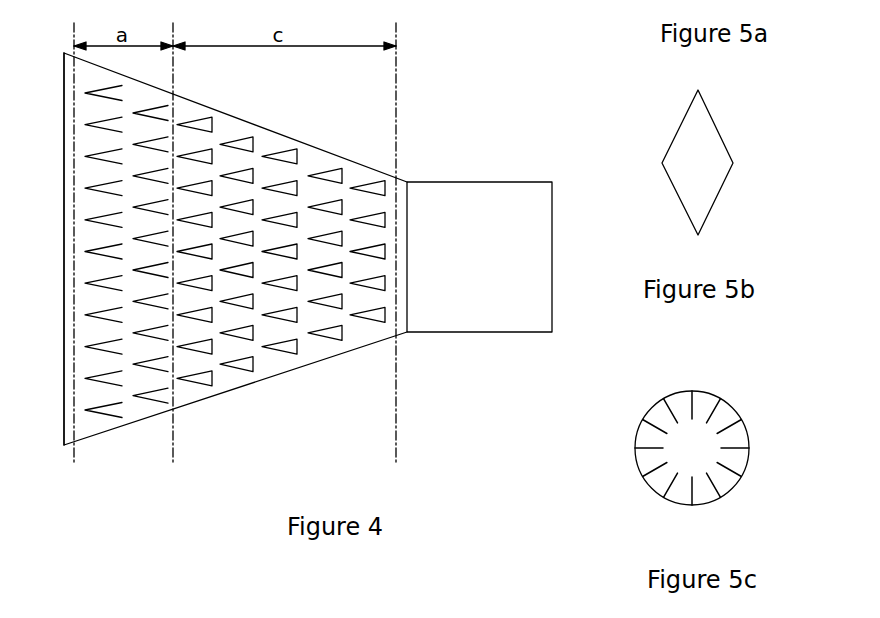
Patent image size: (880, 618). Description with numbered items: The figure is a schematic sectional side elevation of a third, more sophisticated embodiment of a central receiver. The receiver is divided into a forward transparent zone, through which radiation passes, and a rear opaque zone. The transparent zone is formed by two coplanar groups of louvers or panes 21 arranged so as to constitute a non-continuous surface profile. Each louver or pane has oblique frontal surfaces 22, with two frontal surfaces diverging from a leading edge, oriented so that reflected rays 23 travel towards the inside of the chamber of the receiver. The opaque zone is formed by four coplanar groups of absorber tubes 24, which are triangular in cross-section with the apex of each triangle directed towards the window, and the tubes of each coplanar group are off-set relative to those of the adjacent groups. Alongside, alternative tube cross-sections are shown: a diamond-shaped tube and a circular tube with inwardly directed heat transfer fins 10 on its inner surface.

In FIG. 5C, the heat transfer fins 10 is at (693, 407).
In FIG. 4, the louvers or panes 21 is at (107, 409).
In FIG. 4, the oblique frontal surfaces 22 is at (148, 386).
In FIG. 4, the reflected rays 23 is at (45, 279).
In FIG. 4, the absorber tubes 24 is at (375, 320).